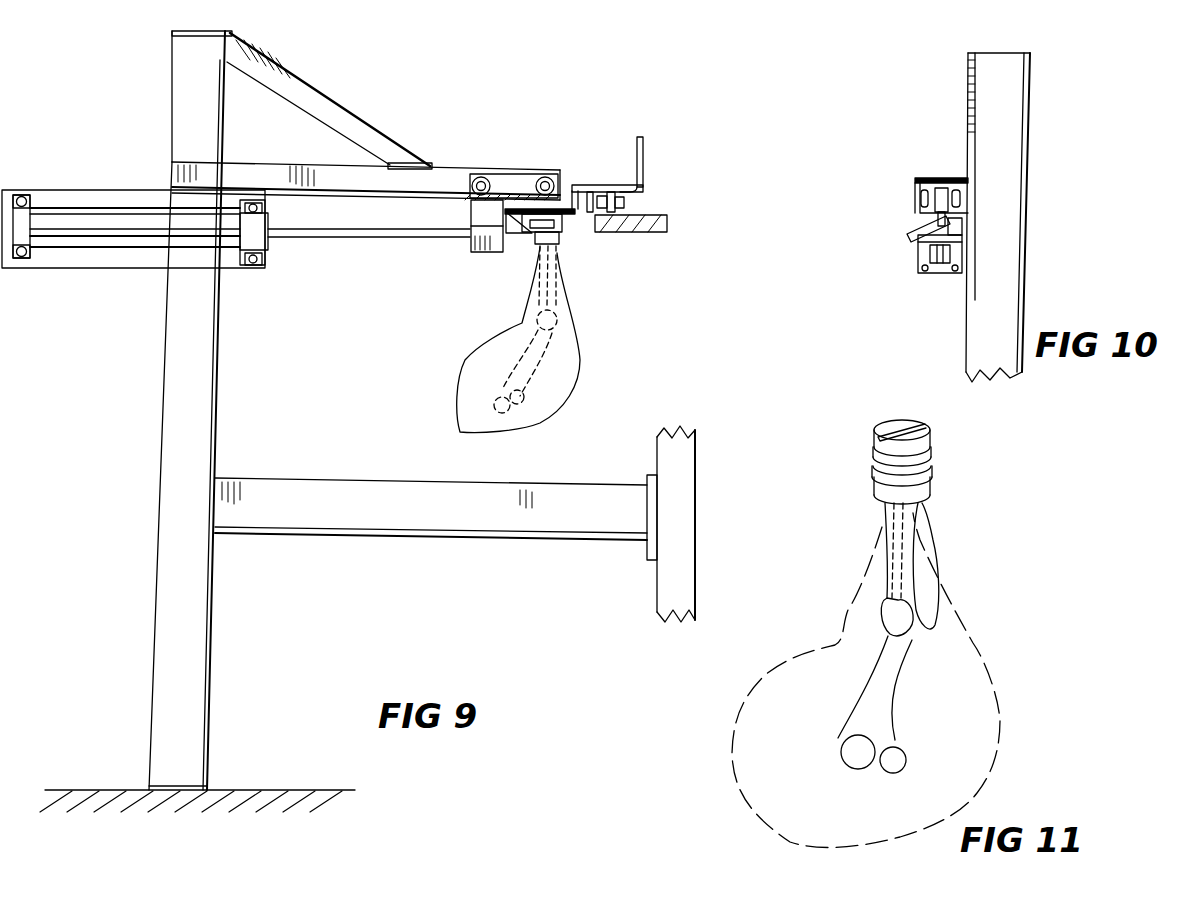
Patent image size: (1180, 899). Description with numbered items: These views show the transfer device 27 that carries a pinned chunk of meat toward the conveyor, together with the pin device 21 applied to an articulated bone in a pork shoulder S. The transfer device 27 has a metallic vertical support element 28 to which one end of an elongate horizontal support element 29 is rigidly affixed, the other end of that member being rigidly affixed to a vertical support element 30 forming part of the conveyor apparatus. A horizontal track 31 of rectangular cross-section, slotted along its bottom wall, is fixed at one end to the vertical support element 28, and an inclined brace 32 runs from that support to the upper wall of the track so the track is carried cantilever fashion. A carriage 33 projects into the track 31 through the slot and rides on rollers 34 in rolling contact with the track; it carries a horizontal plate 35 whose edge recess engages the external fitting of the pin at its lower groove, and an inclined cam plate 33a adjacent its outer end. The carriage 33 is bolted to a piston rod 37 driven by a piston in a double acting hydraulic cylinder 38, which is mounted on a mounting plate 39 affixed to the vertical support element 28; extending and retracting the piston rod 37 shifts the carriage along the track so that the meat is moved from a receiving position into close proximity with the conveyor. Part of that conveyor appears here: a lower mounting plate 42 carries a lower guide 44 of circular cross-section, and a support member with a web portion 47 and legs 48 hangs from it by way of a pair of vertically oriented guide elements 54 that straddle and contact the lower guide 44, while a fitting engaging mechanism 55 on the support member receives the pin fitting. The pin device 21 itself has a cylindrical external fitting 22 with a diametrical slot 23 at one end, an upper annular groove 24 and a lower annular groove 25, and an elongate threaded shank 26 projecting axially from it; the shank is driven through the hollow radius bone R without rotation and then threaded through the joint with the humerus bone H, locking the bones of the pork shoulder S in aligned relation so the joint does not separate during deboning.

In FIG. 11, the pin device 21 is at (975, 484).
In FIG. 11, the external fitting 22 is at (862, 420).
In FIG. 11, the diametrical slot 23 is at (904, 422).
In FIG. 11, the upper annular groove 24 is at (880, 453).
In FIG. 11, the lower annular groove 25 is at (887, 476).
In FIG. 9, the threaded shank 26 is at (560, 312).
In FIG. 11, the threaded shank 26 is at (905, 532).
In FIG. 9, the transfer device 27 is at (118, 496).
In FIG. 10, the transfer device 27 is at (1050, 152).
In FIG. 9, the vertical support element 28 is at (155, 620).
In FIG. 10, the vertical support element 28 is at (1030, 100).
In FIG. 9, the horizontal support element 29 is at (343, 528).
In FIG. 9, the vertical support element 30 is at (655, 592).
In FIG. 9, the horizontal track 31 is at (250, 172).
In FIG. 10, the horizontal track 31 is at (915, 190).
In FIG. 9, the inclined brace 32 is at (315, 100).
In FIG. 10, the inclined brace 32 is at (965, 82).
In FIG. 9, the carriage 33 is at (487, 248).
In FIG. 10, the carriage 33 is at (942, 190).
In FIG. 9, the inclined cam plate 33a is at (510, 208).
In FIG. 10, the inclined cam plate 33a is at (907, 238).
In FIG. 9, the rollers 34 is at (481, 178).
In FIG. 10, the rollers 34 is at (925, 190).
In FIG. 9, the horizontal plate 35 is at (512, 228).
In FIG. 10, the horizontal plate 35 is at (928, 243).
In FIG. 9, the piston rod 37 is at (315, 237).
In FIG. 9, the double acting hydraulic cylinder 38 is at (100, 225).
In FIG. 9, the mounting plate 39 is at (48, 258).
In FIG. 9, the lower mounting plate 42 is at (659, 233).
In FIG. 9, the lower guide 44 is at (618, 198).
In FIG. 9, the web portion 47 is at (648, 152).
In FIG. 9, the legs 48 is at (640, 178).
In FIG. 9, the guide elements 54 is at (612, 206).
In FIG. 9, the fitting engaging mechanisms 55 is at (576, 236).
In FIG. 9, the radius bone R is at (565, 334).
In FIG. 11, the radius bone R is at (890, 563).
In FIG. 9, the humerus bone H is at (525, 382).
In FIG. 11, the humerus bone H is at (874, 698).
In FIG. 9, the pork shoulder S is at (548, 416).
In FIG. 11, the pork shoulder S is at (985, 792).